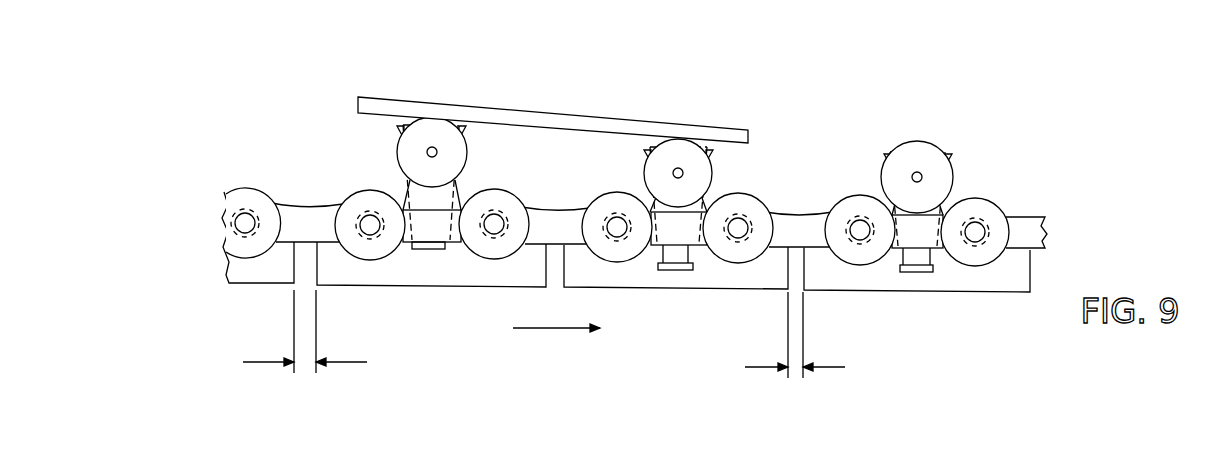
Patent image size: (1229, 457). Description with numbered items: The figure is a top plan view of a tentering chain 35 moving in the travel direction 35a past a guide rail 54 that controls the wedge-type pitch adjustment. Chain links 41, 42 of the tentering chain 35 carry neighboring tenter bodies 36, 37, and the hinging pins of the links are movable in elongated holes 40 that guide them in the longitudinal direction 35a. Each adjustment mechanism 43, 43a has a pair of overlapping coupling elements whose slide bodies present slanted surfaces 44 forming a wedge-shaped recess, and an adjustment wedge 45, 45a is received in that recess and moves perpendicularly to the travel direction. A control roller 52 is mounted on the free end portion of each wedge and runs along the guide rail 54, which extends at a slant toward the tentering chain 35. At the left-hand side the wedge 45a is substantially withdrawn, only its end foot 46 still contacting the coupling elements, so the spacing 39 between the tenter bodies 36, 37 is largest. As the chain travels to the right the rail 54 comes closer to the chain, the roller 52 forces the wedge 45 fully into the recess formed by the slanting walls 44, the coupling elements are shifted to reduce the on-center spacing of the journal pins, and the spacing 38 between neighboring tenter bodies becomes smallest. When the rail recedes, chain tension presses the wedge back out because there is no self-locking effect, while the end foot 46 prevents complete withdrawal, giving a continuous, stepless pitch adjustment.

The tentering chain 35 is at (852, 118).
The travel direction 35a is at (538, 328).
The tenter body 36 is at (253, 273).
The tenter body 37 is at (463, 273).
The spacing 38 is at (795, 367).
The spacing 39 is at (303, 360).
The elongated holes 40 is at (603, 232).
The chain link 41 is at (803, 223).
The chain link 42 is at (312, 218).
The adjustment mechanism 43 is at (806, 196).
The adjustment mechanism 43a is at (451, 183).
The slanted surface 44 is at (683, 227).
The adjustment wedge 45 is at (657, 212).
The adjustment wedge 45a is at (417, 197).
The end foot 46 is at (420, 250).
The control roller 52 is at (695, 153).
The guide rail 54 is at (500, 117).